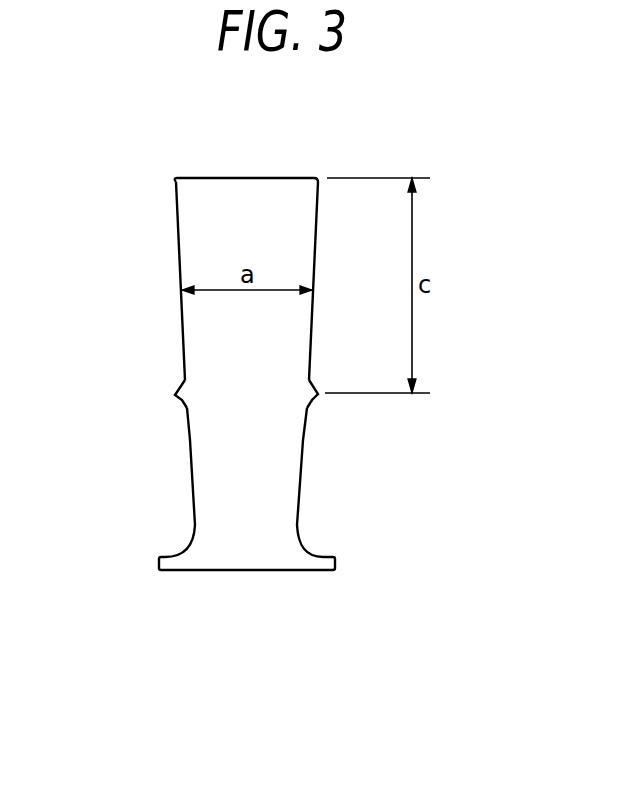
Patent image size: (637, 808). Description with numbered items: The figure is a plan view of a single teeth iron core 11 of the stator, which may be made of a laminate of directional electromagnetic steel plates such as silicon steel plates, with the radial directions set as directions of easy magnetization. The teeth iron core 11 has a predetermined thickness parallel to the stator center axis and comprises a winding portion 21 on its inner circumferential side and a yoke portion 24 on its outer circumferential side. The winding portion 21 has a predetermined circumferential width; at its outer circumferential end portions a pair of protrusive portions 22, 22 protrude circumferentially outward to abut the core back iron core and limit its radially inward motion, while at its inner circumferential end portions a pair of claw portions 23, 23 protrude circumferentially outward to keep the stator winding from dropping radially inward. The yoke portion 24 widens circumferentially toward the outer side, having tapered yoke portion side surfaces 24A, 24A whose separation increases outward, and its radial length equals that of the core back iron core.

The teeth iron core 11 is at (447, 192).
The winding portion 21 is at (238, 475).
The protrusive portion 22 is at (184, 400).
The claw portion 23 is at (172, 556).
The yoke portion 24 is at (183, 265).
The yoke portion side surface 24A is at (176, 218).